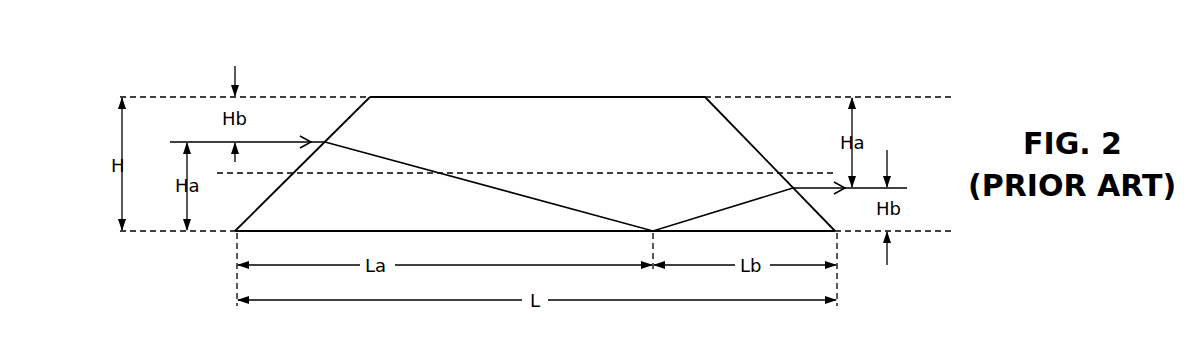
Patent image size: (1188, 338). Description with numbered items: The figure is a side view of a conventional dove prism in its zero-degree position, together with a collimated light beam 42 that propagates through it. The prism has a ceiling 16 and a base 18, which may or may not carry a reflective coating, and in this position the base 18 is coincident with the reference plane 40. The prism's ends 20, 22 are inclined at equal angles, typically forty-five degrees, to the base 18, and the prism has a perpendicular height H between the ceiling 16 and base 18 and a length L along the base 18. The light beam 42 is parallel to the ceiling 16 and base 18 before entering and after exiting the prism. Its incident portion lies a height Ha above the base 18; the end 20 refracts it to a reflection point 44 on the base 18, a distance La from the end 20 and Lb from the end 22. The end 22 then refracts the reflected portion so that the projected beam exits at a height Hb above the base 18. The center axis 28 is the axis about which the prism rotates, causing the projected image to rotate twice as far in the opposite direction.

The ceiling 16 is at (435, 97).
The base 18 is at (335, 232).
The end 20 is at (343, 122).
The end 22 is at (753, 147).
The center axis 28 is at (785, 173).
The reference plane 40 is at (153, 232).
The collimated light beam 42 is at (203, 141).
The reflection point 44 is at (653, 231).